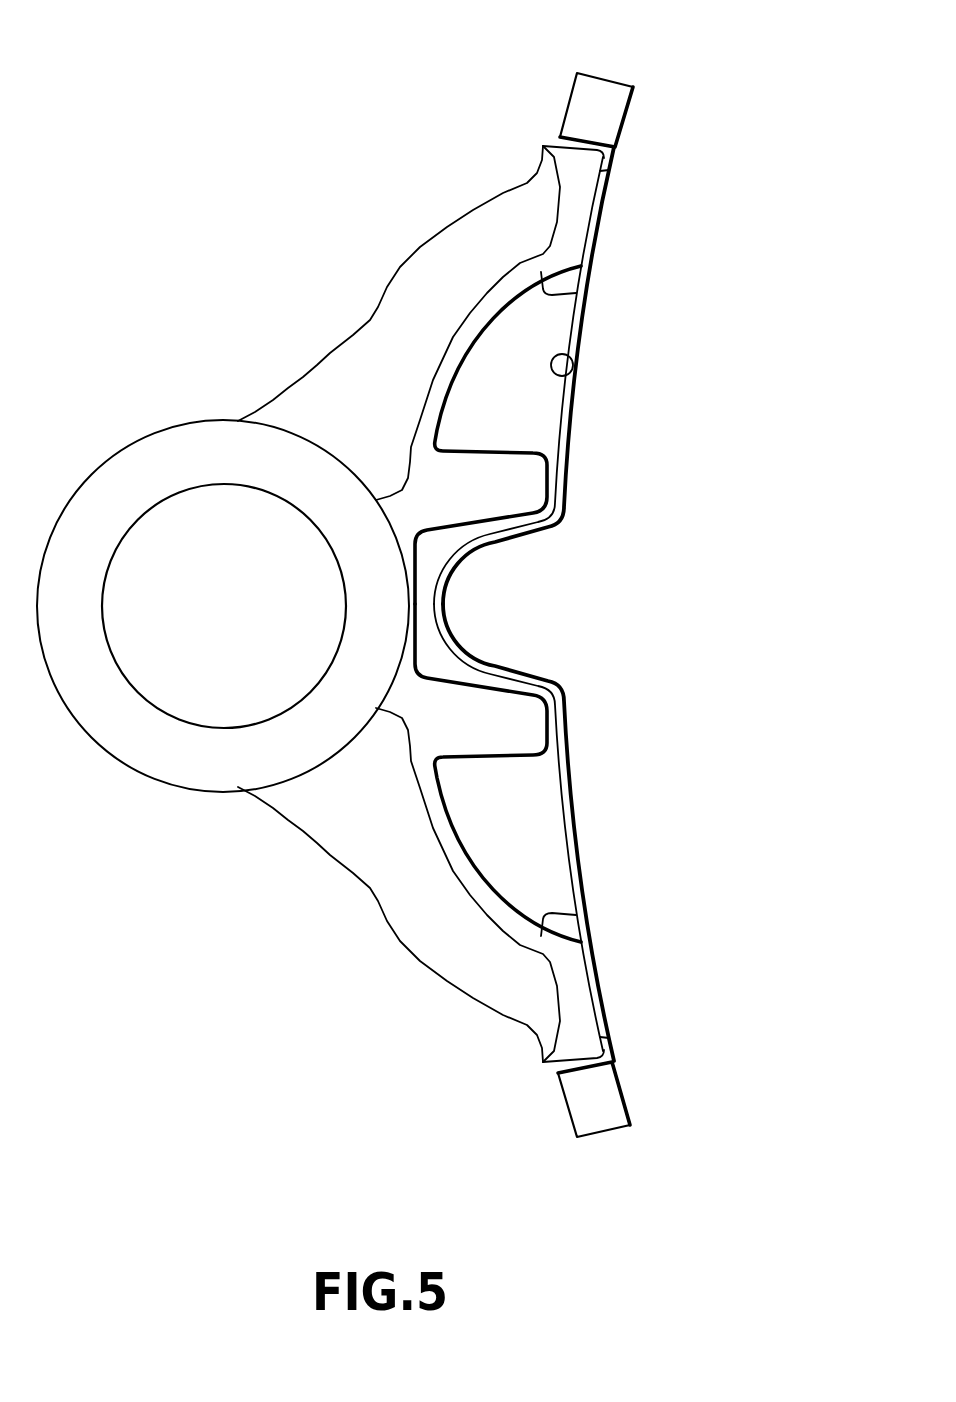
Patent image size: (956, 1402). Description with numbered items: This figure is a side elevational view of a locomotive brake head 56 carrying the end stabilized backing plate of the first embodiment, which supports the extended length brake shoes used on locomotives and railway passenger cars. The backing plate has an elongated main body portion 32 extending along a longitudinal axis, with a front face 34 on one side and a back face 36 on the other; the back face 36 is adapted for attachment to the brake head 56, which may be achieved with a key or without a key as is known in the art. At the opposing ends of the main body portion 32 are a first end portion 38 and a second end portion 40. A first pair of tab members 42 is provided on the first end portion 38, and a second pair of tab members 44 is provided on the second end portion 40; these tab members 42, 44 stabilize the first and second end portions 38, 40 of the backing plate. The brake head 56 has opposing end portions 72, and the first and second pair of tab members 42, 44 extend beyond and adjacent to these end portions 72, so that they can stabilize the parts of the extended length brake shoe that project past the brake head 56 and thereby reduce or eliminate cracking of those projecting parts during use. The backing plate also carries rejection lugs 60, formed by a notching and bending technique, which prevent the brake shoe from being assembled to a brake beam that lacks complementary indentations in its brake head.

The elongated main body portion 32 is at (566, 812).
The front face 34 is at (565, 458).
The back face 36 is at (575, 352).
The first end portion 38 is at (624, 108).
The second end portion 40 is at (601, 1102).
The first pair of tab members 42 is at (587, 100).
The second pair of tab members 44 is at (583, 1105).
The brake head 56 is at (436, 270).
The rejection lugs 60 is at (560, 288).
The end portions 72 is at (557, 158).